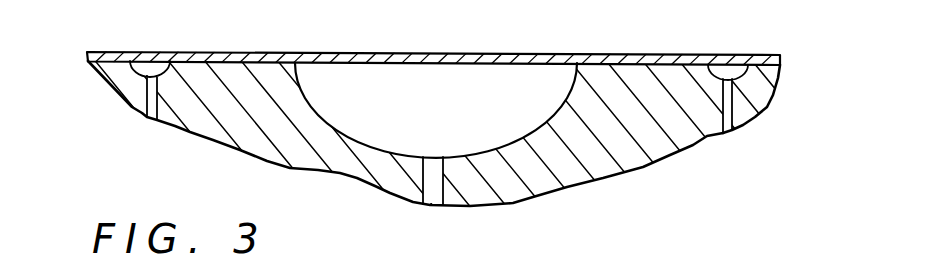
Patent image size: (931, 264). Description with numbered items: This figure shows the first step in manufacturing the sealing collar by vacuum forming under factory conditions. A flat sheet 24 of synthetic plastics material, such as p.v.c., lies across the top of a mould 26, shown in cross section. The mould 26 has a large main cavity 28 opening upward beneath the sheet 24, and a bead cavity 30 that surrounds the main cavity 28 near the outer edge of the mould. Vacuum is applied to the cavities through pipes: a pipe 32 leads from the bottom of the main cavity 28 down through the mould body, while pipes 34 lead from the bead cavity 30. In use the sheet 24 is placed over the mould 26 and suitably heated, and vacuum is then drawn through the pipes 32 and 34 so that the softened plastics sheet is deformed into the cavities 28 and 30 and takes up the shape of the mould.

The sheet 24 is at (405, 51).
The mould 26 is at (650, 143).
The main cavity 28 is at (514, 142).
The bead cavity 30 is at (771, 90).
The pipe 32 is at (428, 178).
The pipe 34 is at (143, 94).